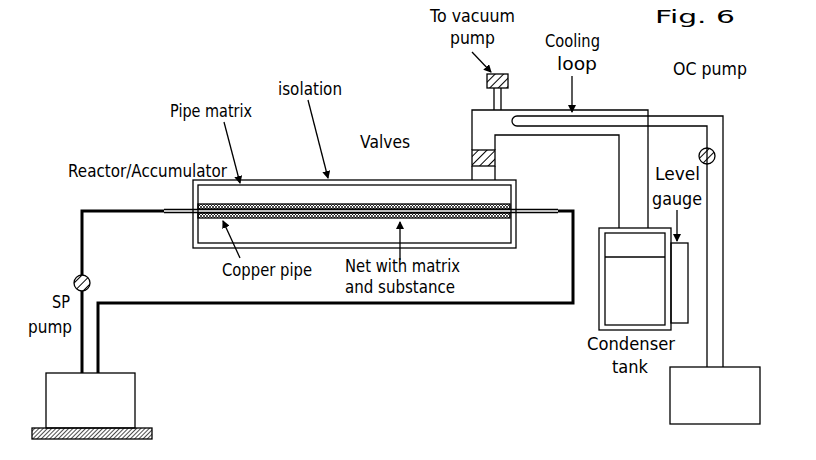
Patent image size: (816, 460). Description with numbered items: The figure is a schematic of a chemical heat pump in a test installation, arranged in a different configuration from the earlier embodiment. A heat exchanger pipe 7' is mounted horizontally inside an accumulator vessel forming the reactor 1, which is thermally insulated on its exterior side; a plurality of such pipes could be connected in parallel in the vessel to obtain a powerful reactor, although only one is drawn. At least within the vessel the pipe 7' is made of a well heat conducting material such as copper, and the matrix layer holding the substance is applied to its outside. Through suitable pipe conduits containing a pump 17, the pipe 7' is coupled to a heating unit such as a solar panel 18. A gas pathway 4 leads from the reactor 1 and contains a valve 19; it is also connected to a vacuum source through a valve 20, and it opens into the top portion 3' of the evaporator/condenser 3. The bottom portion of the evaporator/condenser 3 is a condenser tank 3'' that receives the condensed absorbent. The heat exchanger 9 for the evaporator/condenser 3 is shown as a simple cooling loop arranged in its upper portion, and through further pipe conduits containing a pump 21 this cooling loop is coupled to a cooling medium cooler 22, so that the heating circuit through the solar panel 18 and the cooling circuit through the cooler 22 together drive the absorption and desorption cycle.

The reactor 1 is at (194, 197).
The evaporator/condenser 3 is at (617, 214).
The top portion 3' is at (560, 154).
The condenser tank 3'' is at (623, 282).
The gas pathway 4 is at (506, 148).
The heat exchanger pipe 7' is at (361, 242).
The heat exchanger 9 is at (618, 294).
The pump 17 is at (77, 278).
The solar panel 18 is at (134, 398).
The valve 19 is at (472, 157).
The valve 20 is at (487, 88).
The pump 21 is at (700, 144).
The cooling medium cooler 22 is at (671, 395).